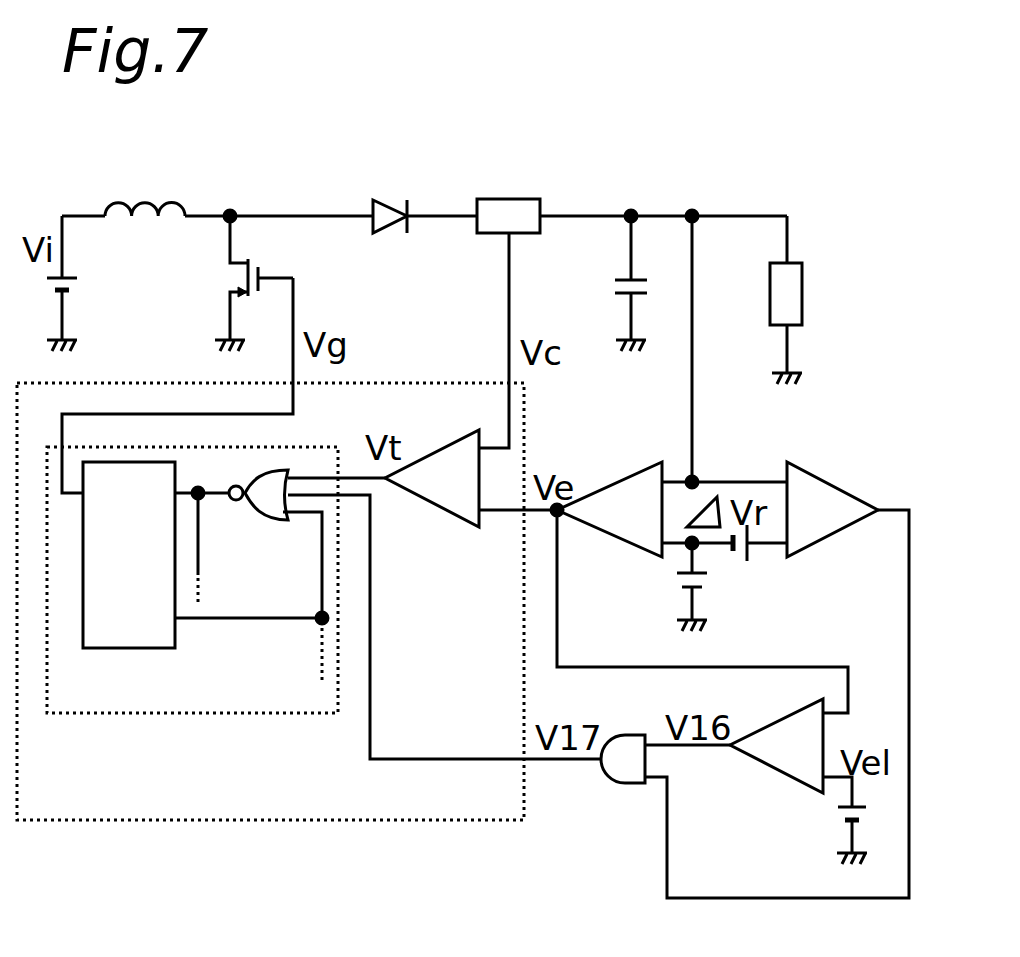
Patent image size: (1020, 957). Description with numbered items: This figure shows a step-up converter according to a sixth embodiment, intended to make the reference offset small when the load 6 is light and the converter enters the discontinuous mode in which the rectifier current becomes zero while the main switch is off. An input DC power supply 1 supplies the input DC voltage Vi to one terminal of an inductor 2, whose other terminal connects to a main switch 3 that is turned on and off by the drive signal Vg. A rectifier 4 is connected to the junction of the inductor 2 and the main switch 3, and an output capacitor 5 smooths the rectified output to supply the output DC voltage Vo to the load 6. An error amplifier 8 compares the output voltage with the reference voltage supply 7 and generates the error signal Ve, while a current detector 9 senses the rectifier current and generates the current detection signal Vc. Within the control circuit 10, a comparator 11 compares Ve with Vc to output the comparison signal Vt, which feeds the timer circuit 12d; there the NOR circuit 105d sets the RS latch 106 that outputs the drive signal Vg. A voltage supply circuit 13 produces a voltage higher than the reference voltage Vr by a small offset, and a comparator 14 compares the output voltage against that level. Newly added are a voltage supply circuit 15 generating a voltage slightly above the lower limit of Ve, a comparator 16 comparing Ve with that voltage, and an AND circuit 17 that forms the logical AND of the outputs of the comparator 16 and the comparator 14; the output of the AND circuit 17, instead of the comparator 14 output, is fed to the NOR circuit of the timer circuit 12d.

The input DC power supply 1 is at (68, 292).
The inductor 2 is at (165, 198).
The main switch 3 is at (228, 278).
The rectifier 4 is at (400, 198).
The output capacitor 5 is at (612, 290).
The load 6 is at (795, 330).
The reference voltage supply 7 is at (670, 583).
The error amplifier 8 is at (648, 470).
The current detector 9 is at (533, 198).
The control circuit 10 is at (320, 822).
The comparator 11 is at (445, 515).
The timer circuit 12d is at (97, 715).
The voltage supply circuit 13 is at (745, 565).
The comparator 14 is at (840, 490).
The voltage supply circuit 15 is at (835, 815).
The comparator 16 is at (765, 765).
The AND circuit 17 is at (610, 785).
The NOR circuit 105d is at (255, 520).
The RS latch 106 is at (178, 648).